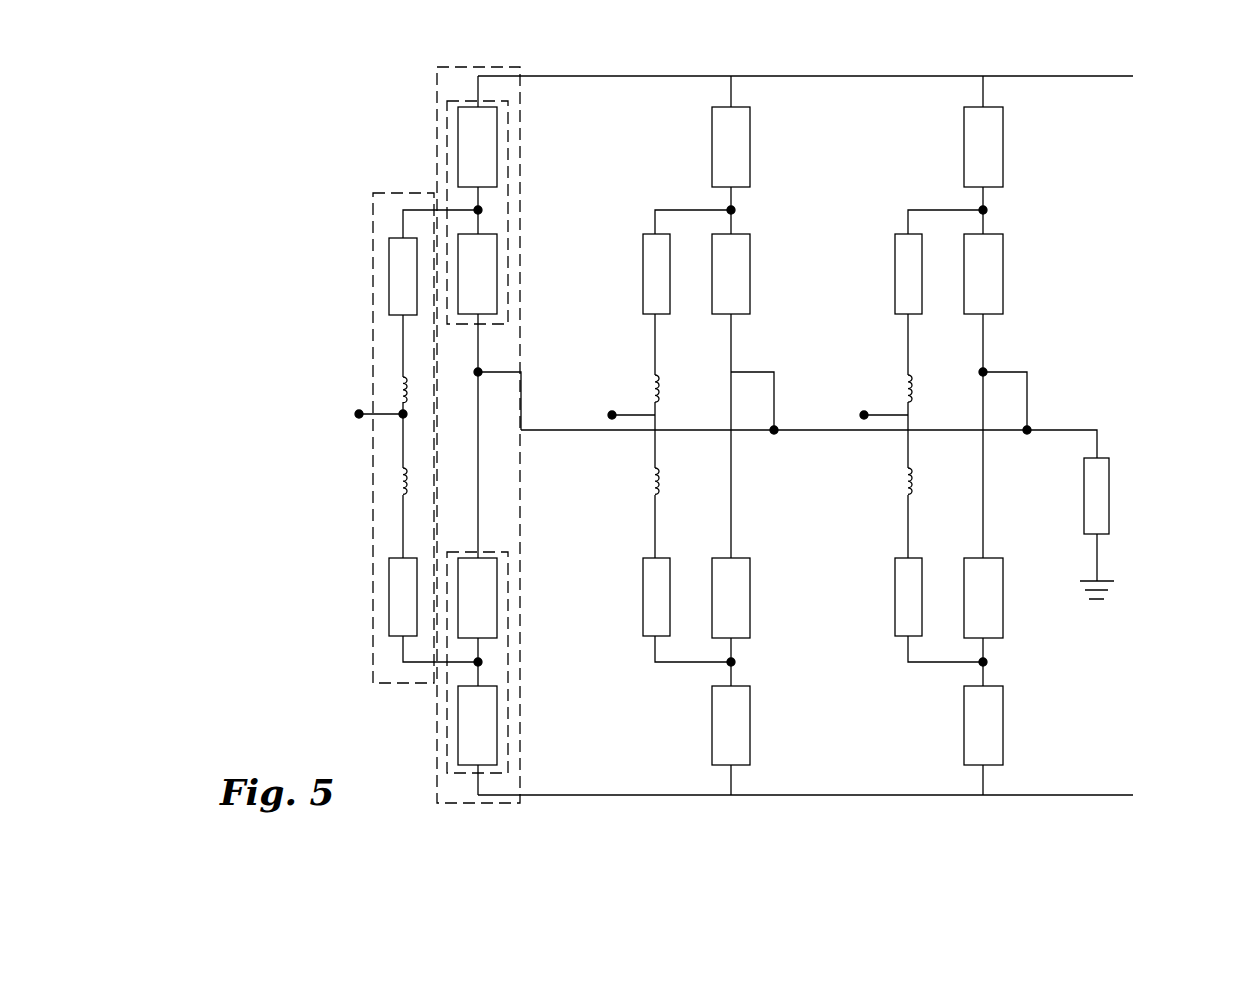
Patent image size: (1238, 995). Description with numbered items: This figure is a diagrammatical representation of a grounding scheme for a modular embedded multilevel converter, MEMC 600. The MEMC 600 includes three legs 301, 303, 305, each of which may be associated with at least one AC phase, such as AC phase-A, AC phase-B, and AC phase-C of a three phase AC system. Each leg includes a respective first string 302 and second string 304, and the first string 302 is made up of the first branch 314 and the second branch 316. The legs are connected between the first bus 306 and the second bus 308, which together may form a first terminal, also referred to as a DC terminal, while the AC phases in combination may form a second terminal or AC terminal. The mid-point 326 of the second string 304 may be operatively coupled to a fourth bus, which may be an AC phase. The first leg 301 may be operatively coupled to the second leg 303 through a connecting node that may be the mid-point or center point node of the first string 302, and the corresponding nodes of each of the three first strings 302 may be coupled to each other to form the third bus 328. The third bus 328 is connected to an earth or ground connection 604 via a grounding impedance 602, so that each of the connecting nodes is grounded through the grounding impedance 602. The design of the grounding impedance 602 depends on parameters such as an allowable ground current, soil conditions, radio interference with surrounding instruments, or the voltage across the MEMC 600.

The modular embedded multilevel converter 600 is at (292, 114).
The first leg 301 is at (478, 88).
The first string 302 is at (432, 769).
The second leg 303 is at (733, 92).
The second string 304 is at (364, 572).
The third leg 305 is at (985, 92).
The first bus 306 is at (1066, 76).
The second bus 308 is at (1104, 795).
The first branch 314 is at (504, 156).
The second branch 316 is at (442, 723).
The mid-point 326 is at (400, 412).
The third bus 328 is at (1072, 430).
The grounding impedance 602 is at (1110, 480).
The ground connection 604 is at (1110, 582).